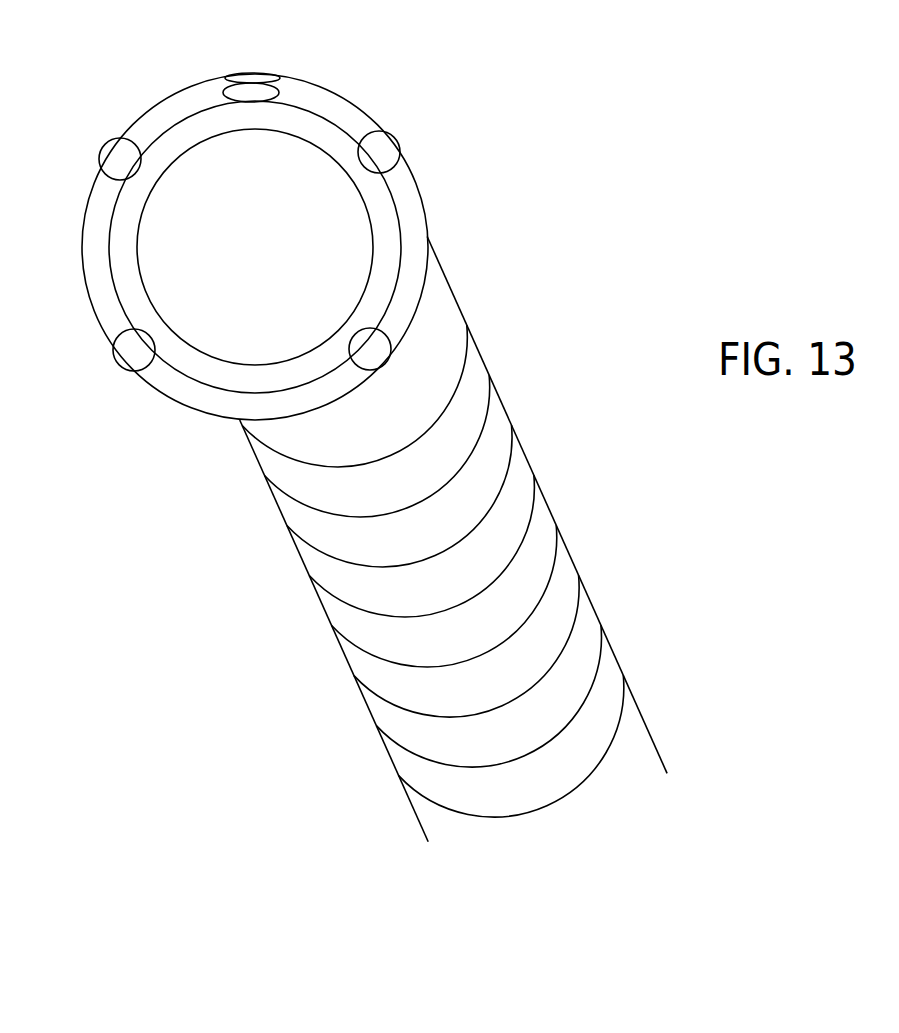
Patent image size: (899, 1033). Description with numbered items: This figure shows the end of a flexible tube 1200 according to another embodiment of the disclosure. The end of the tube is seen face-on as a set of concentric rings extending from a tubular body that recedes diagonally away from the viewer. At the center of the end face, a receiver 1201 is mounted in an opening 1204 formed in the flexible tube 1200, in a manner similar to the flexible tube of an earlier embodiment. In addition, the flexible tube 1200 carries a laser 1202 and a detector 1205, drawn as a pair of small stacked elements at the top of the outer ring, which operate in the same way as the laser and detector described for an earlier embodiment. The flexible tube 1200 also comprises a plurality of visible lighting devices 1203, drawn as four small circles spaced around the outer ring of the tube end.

The flexible tube 1200 is at (540, 312).
The receiver 1201 is at (274, 257).
The laser 1202 is at (250, 74).
The visible lighting devices 1203 is at (382, 131).
The opening 1204 is at (397, 261).
The detector 1205 is at (232, 101).